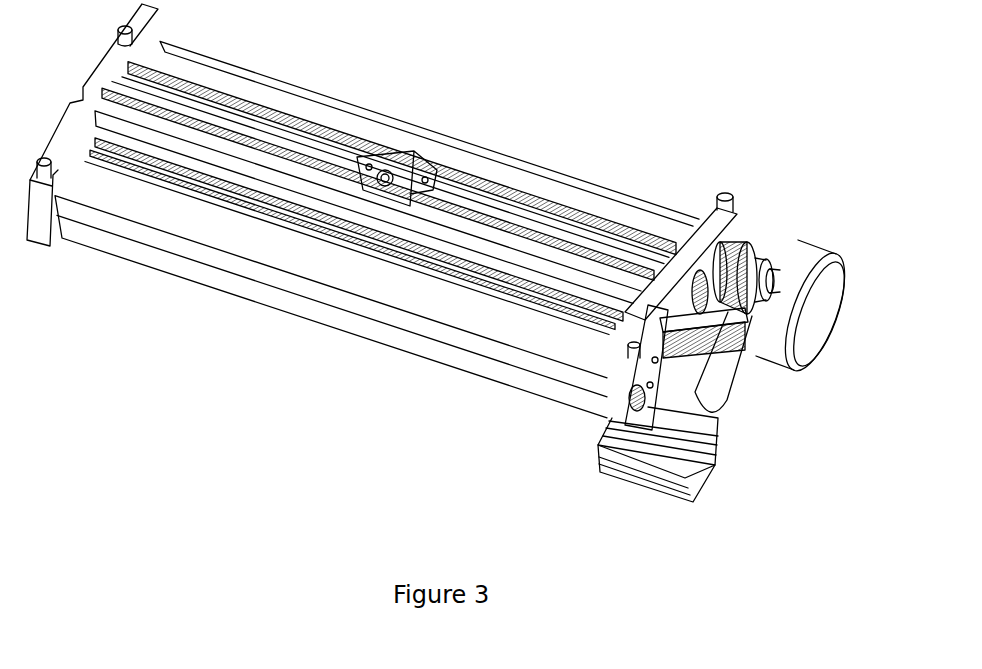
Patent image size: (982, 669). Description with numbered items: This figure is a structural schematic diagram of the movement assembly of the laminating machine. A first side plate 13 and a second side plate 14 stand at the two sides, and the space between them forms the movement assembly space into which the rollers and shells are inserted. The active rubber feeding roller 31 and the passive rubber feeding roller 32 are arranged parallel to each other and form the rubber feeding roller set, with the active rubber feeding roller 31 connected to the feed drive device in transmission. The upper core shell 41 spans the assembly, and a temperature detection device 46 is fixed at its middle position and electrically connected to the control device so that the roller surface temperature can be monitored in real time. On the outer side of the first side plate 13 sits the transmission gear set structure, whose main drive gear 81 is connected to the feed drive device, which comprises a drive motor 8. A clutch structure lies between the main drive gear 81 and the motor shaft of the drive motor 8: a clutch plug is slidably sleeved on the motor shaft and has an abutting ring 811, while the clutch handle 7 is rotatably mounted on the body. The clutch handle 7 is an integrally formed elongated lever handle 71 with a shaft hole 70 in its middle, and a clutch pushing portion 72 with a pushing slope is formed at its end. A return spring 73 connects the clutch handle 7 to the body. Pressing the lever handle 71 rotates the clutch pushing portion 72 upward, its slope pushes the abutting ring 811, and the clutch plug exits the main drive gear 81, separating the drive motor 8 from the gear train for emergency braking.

The second side plate 14 is at (108, 58).
The upper core shell 41 is at (254, 90).
The temperature detection device 46 is at (393, 158).
The first side plate 13 is at (690, 248).
The main drive gear 81 is at (739, 232).
The clutch pushing portion 72 is at (757, 250).
The abutting ring 811 is at (765, 263).
The drive motor 8 is at (822, 370).
The passive rubber feeding roller 32 is at (308, 293).
The active rubber feeding roller 31 is at (338, 325).
The return spring 73 is at (622, 403).
The lever handle 71 is at (716, 418).
The shaft hole 70 is at (735, 400).
The clutch handle 7 is at (641, 478).